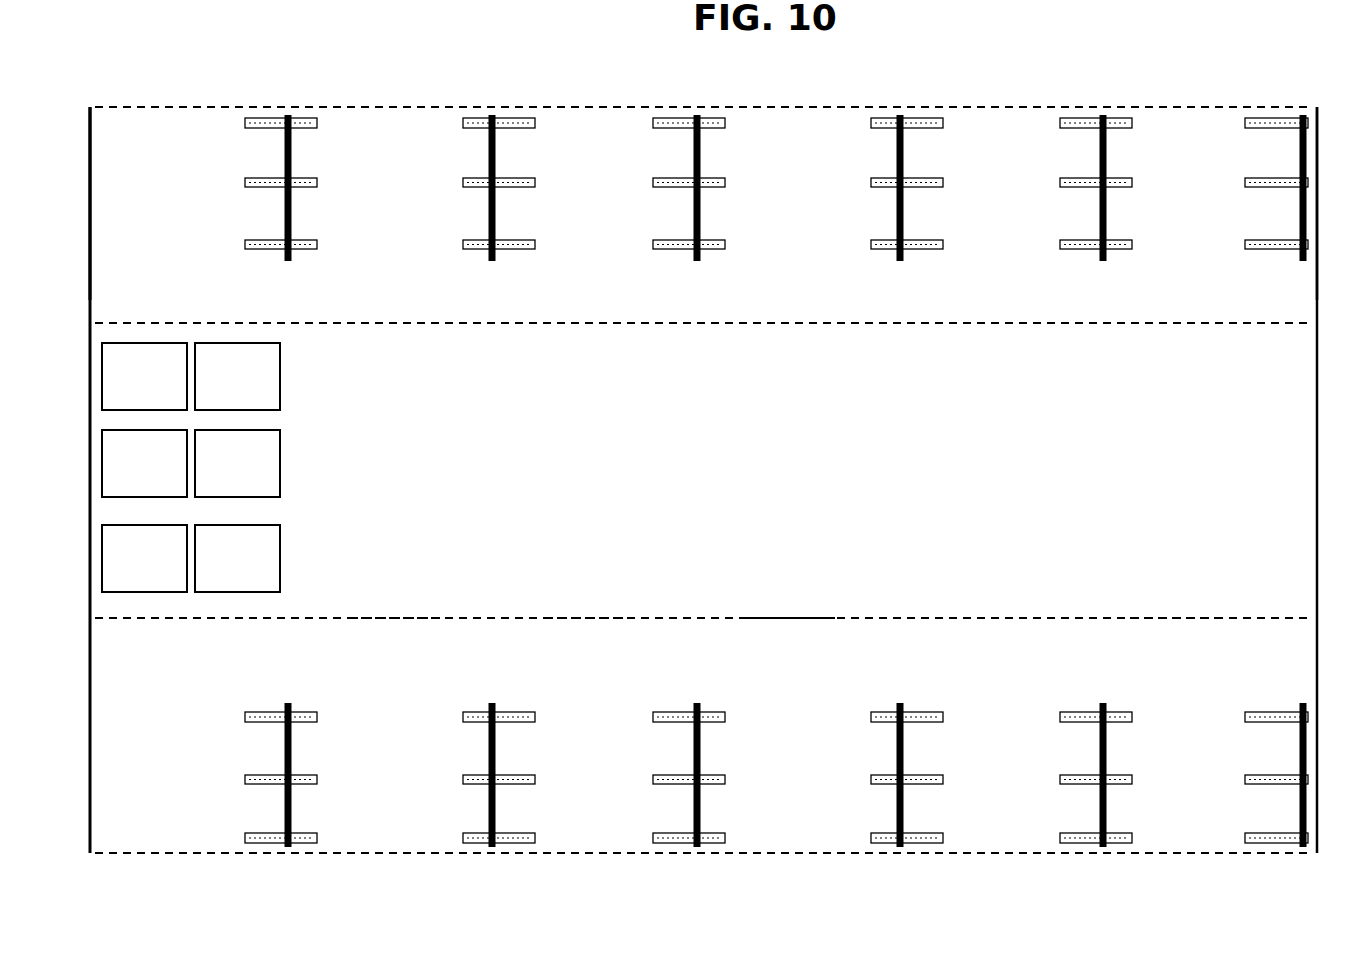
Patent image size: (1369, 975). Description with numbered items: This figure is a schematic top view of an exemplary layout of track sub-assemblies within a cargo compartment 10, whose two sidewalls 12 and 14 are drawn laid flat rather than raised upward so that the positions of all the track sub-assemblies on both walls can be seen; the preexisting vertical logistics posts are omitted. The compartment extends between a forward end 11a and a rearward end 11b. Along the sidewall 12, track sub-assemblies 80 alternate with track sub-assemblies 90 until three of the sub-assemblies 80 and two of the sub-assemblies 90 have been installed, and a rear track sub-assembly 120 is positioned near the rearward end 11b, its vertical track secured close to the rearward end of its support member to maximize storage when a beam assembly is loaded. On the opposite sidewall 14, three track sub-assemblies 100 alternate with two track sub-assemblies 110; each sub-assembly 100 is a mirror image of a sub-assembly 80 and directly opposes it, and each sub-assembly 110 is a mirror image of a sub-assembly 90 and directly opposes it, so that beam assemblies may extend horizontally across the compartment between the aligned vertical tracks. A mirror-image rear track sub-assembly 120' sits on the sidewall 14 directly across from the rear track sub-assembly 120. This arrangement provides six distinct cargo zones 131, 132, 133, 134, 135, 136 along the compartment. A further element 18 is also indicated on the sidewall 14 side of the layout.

The cargo compartment 10 is at (1294, 378).
The forward end 11a is at (88, 140).
The rearward end 11b is at (1319, 128).
The sidewall 12 is at (155, 122).
The sidewall 14 is at (146, 838).
The storage unit 18 is at (112, 378).
The track sub-assembly 80 is at (285, 94).
The track sub-assembly 90 is at (489, 94).
The track sub-assembly 100 is at (284, 868).
The track sub-assembly 110 is at (490, 868).
The rear track sub-assembly 120 is at (1271, 148).
The mirror image rear track sub-assembly 120' is at (1263, 809).
The cargo zone 131 is at (113, 507).
The cargo zone 132 is at (428, 610).
The cargo zone 133 is at (621, 610).
The cargo zone 134 is at (815, 610).
The cargo zone 135 is at (1005, 610).
The cargo zone 136 is at (1199, 610).